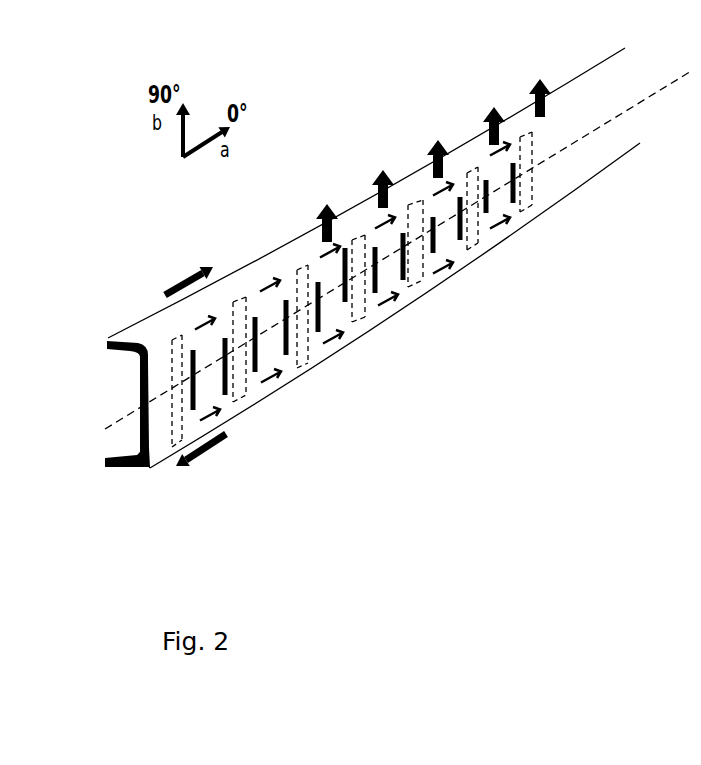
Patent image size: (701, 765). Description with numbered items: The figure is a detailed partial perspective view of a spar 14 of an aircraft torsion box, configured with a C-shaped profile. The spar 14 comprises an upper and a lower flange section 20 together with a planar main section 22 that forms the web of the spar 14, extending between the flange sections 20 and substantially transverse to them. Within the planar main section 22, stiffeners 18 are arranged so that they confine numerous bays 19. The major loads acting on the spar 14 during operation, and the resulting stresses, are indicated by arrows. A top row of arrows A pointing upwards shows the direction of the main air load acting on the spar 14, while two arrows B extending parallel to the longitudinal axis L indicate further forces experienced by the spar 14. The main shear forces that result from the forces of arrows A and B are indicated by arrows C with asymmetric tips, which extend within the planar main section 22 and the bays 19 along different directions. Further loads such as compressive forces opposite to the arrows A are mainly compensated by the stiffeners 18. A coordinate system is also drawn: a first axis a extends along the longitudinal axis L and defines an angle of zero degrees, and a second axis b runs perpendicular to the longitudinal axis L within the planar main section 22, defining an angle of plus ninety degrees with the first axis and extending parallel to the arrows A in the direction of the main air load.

The spar 14 is at (399, 245).
The stiffeners 18 is at (352, 300).
The bays 19 is at (353, 318).
The flange section 20 is at (120, 407).
The planar main section 22 is at (152, 477).
The arrows A is at (563, 44).
The arrows B is at (193, 374).
The arrows C is at (479, 301).
The longitudinal axis L is at (682, 110).